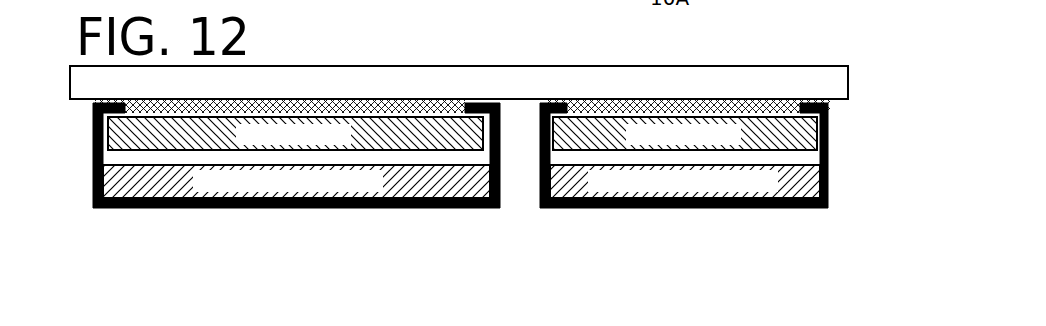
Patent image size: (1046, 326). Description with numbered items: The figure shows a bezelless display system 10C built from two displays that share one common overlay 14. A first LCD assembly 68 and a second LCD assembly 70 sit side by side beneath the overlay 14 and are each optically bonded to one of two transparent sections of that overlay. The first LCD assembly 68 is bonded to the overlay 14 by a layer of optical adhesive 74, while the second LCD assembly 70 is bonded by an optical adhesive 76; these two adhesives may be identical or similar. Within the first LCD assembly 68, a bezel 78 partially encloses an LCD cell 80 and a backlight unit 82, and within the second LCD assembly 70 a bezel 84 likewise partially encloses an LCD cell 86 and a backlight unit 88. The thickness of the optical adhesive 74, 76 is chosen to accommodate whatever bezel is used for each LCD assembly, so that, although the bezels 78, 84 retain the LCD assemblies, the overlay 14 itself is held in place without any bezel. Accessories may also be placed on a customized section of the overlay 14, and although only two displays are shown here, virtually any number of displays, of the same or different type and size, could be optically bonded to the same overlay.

The display system 10C is at (466, 47).
The overlay 14 is at (508, 66).
The first LCD assembly 68 is at (341, 239).
The second LCD assembly 70 is at (708, 239).
The optical adhesive 74 is at (100, 102).
The optical adhesive 76 is at (815, 102).
The bezel 78 is at (188, 209).
The LCD cell 80 is at (353, 108).
The backlight unit 82 is at (392, 163).
The bezel 84 is at (608, 209).
The LCD cell 86 is at (594, 110).
The backlight unit 88 is at (773, 163).